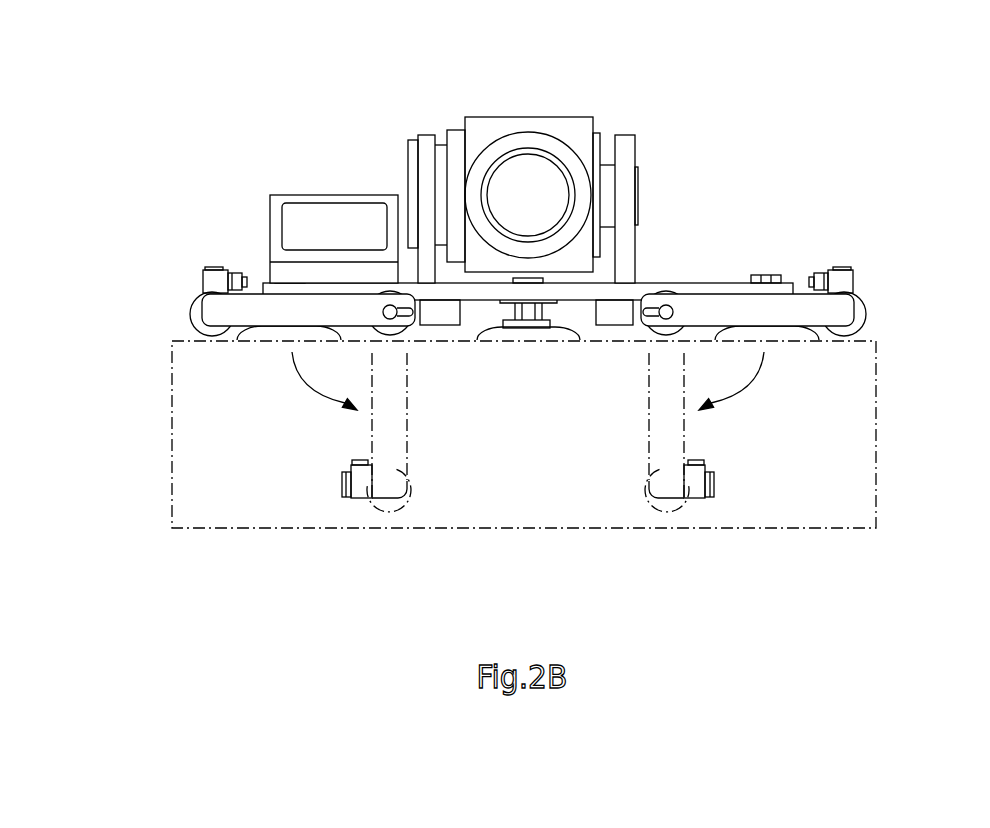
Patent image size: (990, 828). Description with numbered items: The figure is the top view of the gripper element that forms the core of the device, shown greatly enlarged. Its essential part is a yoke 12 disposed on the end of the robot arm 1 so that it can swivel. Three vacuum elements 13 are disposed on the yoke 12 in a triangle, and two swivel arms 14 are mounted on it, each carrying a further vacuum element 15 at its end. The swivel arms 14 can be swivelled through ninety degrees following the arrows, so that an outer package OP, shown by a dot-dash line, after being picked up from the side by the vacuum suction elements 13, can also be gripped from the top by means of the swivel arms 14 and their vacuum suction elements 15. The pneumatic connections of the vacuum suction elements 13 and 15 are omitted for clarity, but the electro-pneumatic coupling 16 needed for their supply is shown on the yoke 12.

The robot arm 1 is at (573, 130).
The yoke 12 is at (592, 291).
The vacuum elements 13 is at (271, 335).
The swivel arms 14 is at (260, 307).
The vacuum element 15 is at (195, 310).
The electro-pneumatic coupling 16 is at (305, 212).
The outer package OP is at (860, 493).